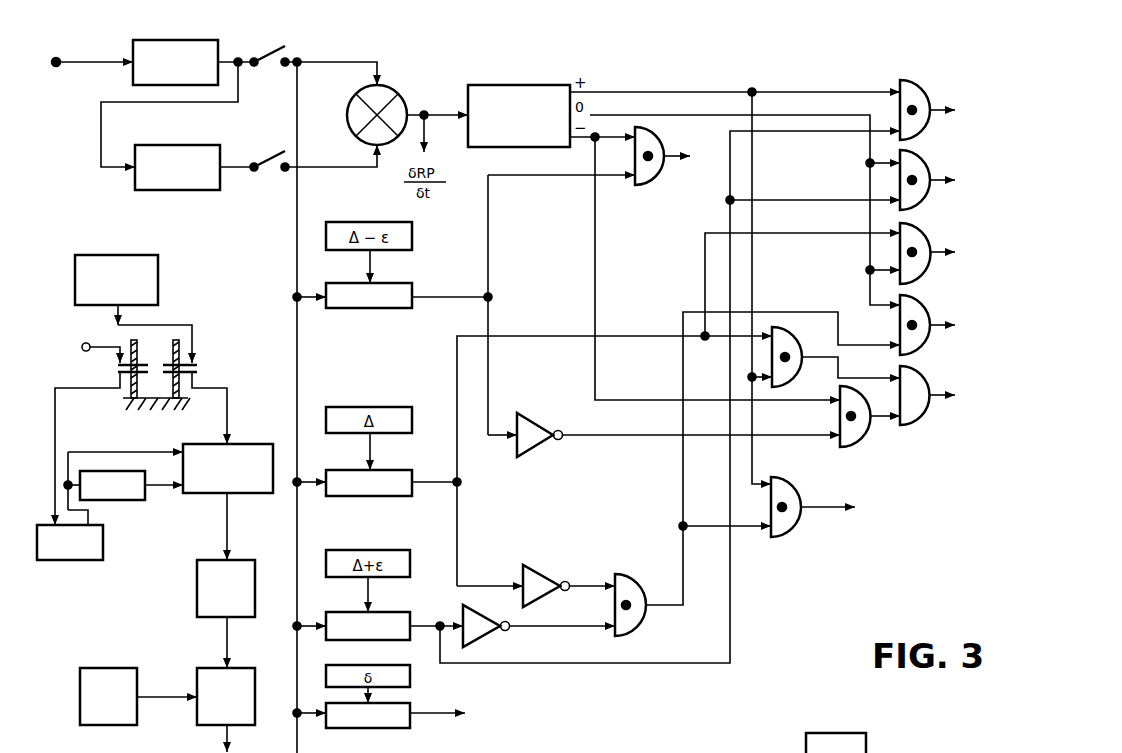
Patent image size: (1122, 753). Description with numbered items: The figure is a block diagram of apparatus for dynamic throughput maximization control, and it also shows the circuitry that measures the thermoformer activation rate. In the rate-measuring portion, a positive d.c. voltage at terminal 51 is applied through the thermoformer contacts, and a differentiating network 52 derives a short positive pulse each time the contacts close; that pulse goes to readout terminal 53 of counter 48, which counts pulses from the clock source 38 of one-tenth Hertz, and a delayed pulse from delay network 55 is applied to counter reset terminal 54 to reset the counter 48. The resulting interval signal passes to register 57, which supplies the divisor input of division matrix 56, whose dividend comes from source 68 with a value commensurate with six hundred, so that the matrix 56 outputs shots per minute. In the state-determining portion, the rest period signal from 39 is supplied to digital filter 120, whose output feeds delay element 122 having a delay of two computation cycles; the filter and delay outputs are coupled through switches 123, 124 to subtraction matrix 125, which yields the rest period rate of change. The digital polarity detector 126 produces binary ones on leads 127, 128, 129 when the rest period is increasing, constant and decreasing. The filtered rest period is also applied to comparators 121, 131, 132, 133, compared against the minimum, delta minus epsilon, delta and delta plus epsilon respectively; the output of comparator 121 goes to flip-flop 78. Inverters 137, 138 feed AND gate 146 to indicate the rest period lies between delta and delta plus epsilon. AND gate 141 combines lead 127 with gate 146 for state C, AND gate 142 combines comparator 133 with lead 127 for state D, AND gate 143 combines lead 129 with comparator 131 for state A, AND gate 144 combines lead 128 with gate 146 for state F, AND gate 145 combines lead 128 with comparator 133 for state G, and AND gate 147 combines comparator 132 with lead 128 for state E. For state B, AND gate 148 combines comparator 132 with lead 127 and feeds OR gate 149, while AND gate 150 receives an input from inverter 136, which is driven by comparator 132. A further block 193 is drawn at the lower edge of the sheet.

The digital filter 120 is at (178, 40).
The delay element 122 is at (178, 145).
The switch 123 is at (273, 48).
The switch 124 is at (273, 153).
The subtraction matrix 125 is at (396, 92).
The digital polarity detector 126 is at (556, 84).
The output lead 127 is at (640, 92).
The output lead 128 is at (661, 115).
The output lead 129 is at (593, 140).
The comparator 131 is at (415, 283).
The comparator 132 is at (409, 470).
The comparator 133 is at (358, 640).
The comparator 121 is at (350, 728).
The inverter 136 is at (548, 404).
The inverter 137 is at (545, 566).
The inverter 138 is at (488, 635).
The AND gate 141 is at (790, 530).
The AND gate 142 is at (922, 85).
The AND gate 143 is at (652, 140).
The AND gate 144 is at (922, 302).
The AND gate 145 is at (922, 157).
The AND gate 146 is at (643, 616).
The AND gate 147 is at (922, 230).
The AND gate 148 is at (800, 345).
The OR gate 149 is at (922, 372).
The AND gate 150 is at (862, 438).
The clock source 38 is at (78, 254).
The terminal 51 is at (70, 345).
The counter 48 is at (250, 444).
The readout terminal 53 is at (184, 447).
The counter reset terminal 54 is at (180, 489).
The delay network 55 is at (124, 500).
The differentiating network 52 is at (73, 560).
The register 57 is at (247, 560).
The division matrix 56 is at (197, 725).
The source 68 is at (80, 668).
The block 193 is at (868, 742).
The RP input from 39 is at (82, 78).
The flip-flop 78 is at (457, 720).